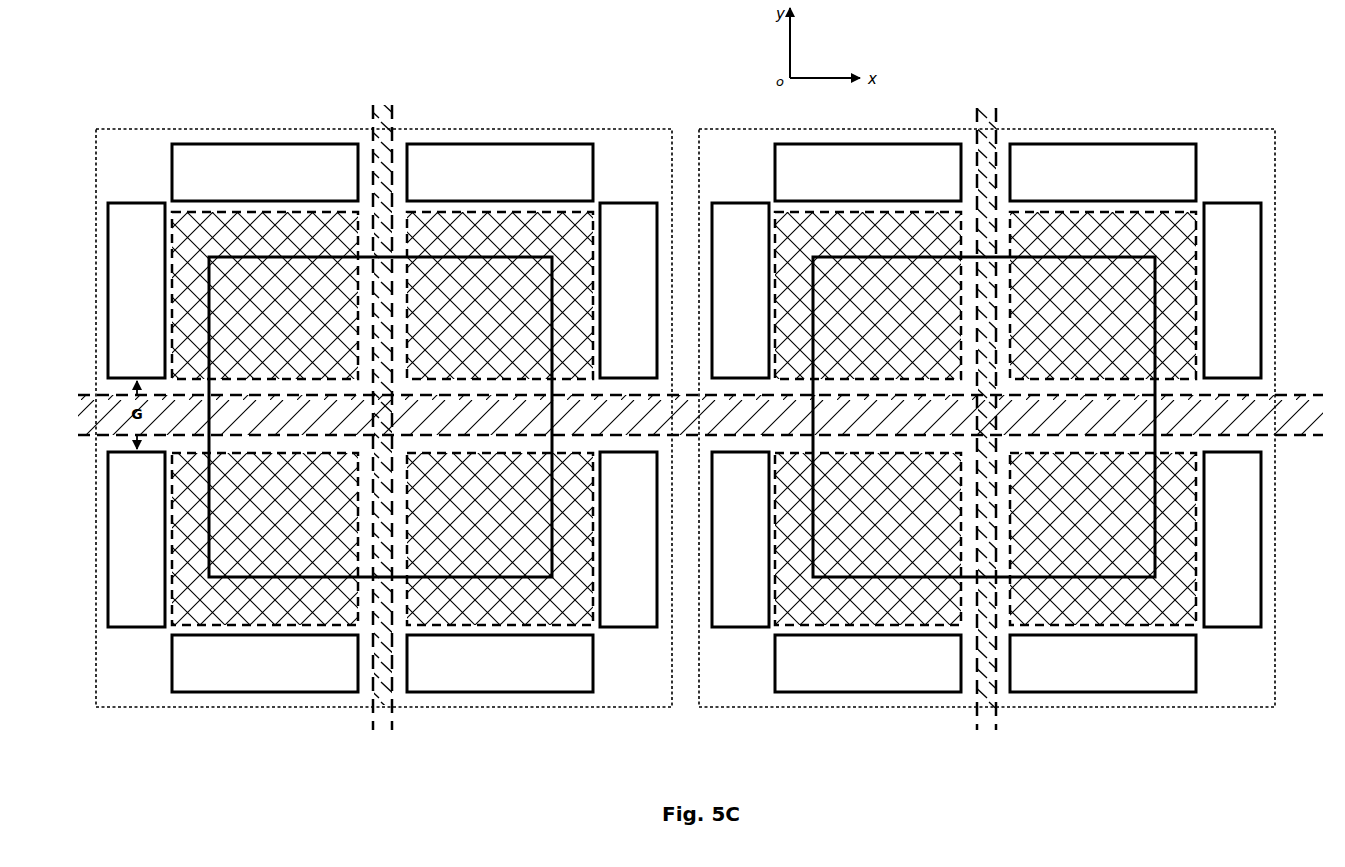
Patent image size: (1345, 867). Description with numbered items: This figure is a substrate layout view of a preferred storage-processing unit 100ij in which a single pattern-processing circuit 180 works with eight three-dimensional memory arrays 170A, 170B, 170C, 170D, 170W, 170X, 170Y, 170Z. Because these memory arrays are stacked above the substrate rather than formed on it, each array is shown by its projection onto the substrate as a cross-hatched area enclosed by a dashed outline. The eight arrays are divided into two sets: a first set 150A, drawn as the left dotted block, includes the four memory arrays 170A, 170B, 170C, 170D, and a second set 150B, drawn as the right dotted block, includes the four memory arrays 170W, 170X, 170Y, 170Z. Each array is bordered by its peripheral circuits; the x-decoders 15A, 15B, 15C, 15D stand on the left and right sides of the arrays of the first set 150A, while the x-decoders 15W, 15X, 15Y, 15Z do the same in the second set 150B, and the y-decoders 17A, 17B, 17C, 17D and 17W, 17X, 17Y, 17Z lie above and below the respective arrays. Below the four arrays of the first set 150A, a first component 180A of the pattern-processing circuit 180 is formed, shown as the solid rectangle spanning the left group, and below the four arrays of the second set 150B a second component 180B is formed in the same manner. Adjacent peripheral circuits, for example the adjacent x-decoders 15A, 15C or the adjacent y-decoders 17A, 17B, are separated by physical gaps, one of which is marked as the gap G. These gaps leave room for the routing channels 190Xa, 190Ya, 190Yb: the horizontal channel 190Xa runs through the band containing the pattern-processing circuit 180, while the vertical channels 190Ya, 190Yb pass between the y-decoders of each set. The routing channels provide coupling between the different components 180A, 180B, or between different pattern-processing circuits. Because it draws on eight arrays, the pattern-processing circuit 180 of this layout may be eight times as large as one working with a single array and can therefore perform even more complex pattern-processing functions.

The storage-processing unit (SPU) 100ij is at (1132, 75).
The first set 150A is at (633, 140).
The second set 150B is at (1237, 138).
The y-decoder 17A is at (265, 172).
The y-decoder 17B is at (500, 172).
The y-decoder 17C is at (265, 663).
The y-decoder 17D is at (500, 663).
The y-decoder 17W is at (868, 172).
The y-decoder 17X is at (1103, 172).
The y-decoder 17Y is at (868, 663).
The y-decoder 17Z is at (1103, 663).
The x-decoder 15A is at (136, 290).
The x-decoder 15B is at (628, 290).
The x-decoder 15C is at (136, 539).
The x-decoder 15D is at (628, 539).
The x-decoder 15W is at (740, 290).
The x-decoder 15X is at (1232, 290).
The x-decoder 15Y is at (740, 539).
The x-decoder 15Z is at (1232, 539).
The 3D-M array 170A is at (265, 295).
The 3D-M array 170B is at (500, 295).
The 3D-M array 170C is at (265, 539).
The 3D-M array 170D is at (500, 539).
The 3D-M array 170W is at (868, 295).
The 3D-M array 170X is at (1103, 295).
The 3D-M array 170Y is at (868, 539).
The 3D-M array 170Z is at (1103, 539).
The pattern-processing circuit 180 is at (583, 404).
The first component 180A is at (550, 410).
The second component 180B is at (815, 410).
The routing channel 190Ya is at (387, 105).
The routing channel 190Yb is at (988, 105).
The routing channel 190Xa is at (1293, 410).